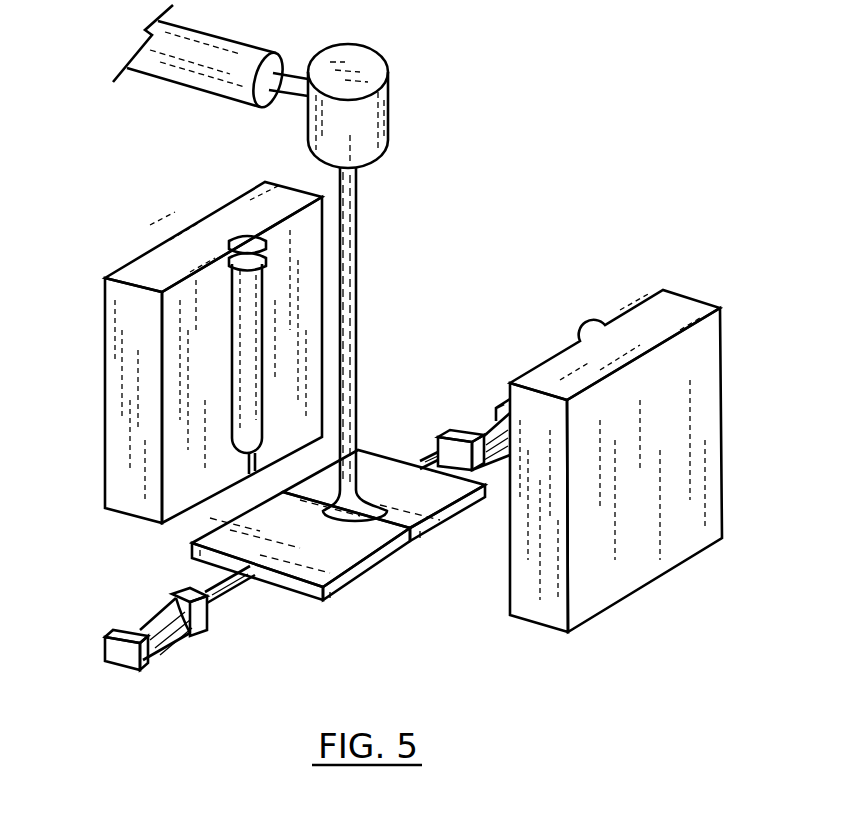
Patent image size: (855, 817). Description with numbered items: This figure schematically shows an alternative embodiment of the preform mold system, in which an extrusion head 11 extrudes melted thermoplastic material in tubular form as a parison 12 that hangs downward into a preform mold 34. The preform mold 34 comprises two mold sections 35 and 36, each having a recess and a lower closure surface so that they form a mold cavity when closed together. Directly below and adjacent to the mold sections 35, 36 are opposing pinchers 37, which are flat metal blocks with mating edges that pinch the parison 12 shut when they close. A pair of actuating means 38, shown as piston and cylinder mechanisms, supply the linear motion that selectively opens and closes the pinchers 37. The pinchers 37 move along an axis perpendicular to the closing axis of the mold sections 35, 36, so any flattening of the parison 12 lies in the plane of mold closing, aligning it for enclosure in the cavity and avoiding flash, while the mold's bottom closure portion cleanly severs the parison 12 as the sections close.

The extrusion head 11 is at (357, 118).
The parison 12 is at (353, 242).
The preform mold 34 is at (623, 631).
The mold section 35 is at (135, 393).
The mold section 36 is at (612, 542).
The pinchers 37 is at (447, 517).
The actuating means 38 is at (157, 627).